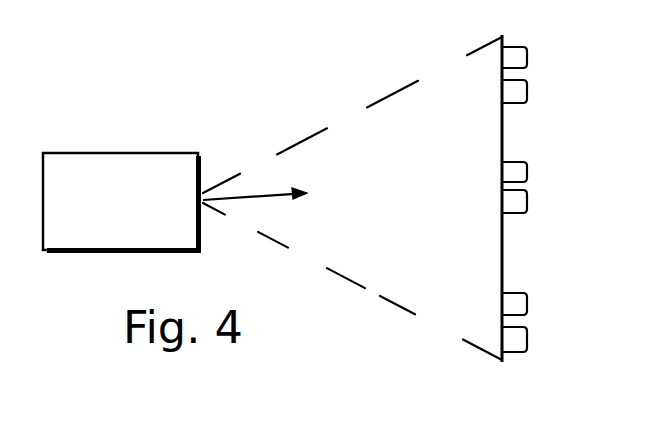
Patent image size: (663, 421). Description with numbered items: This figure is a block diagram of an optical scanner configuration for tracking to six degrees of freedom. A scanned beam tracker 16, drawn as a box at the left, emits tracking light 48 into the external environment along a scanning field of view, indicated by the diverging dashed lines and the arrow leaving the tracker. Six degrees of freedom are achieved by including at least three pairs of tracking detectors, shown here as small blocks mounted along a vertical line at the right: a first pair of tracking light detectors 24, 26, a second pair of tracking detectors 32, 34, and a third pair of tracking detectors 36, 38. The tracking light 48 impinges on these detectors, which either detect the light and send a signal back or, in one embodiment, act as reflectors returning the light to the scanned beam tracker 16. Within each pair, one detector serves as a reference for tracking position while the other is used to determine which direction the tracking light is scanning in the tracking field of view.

The scanned beam tracker 16 is at (98, 153).
The tracking light 48 is at (250, 192).
The tracking detector 38 is at (517, 47).
The tracking detector 36 is at (520, 103).
The tracking detector 34 is at (517, 162).
The tracking detector 32 is at (518, 213).
The tracking light detector 26 is at (517, 293).
The tracking light detector 24 is at (518, 352).